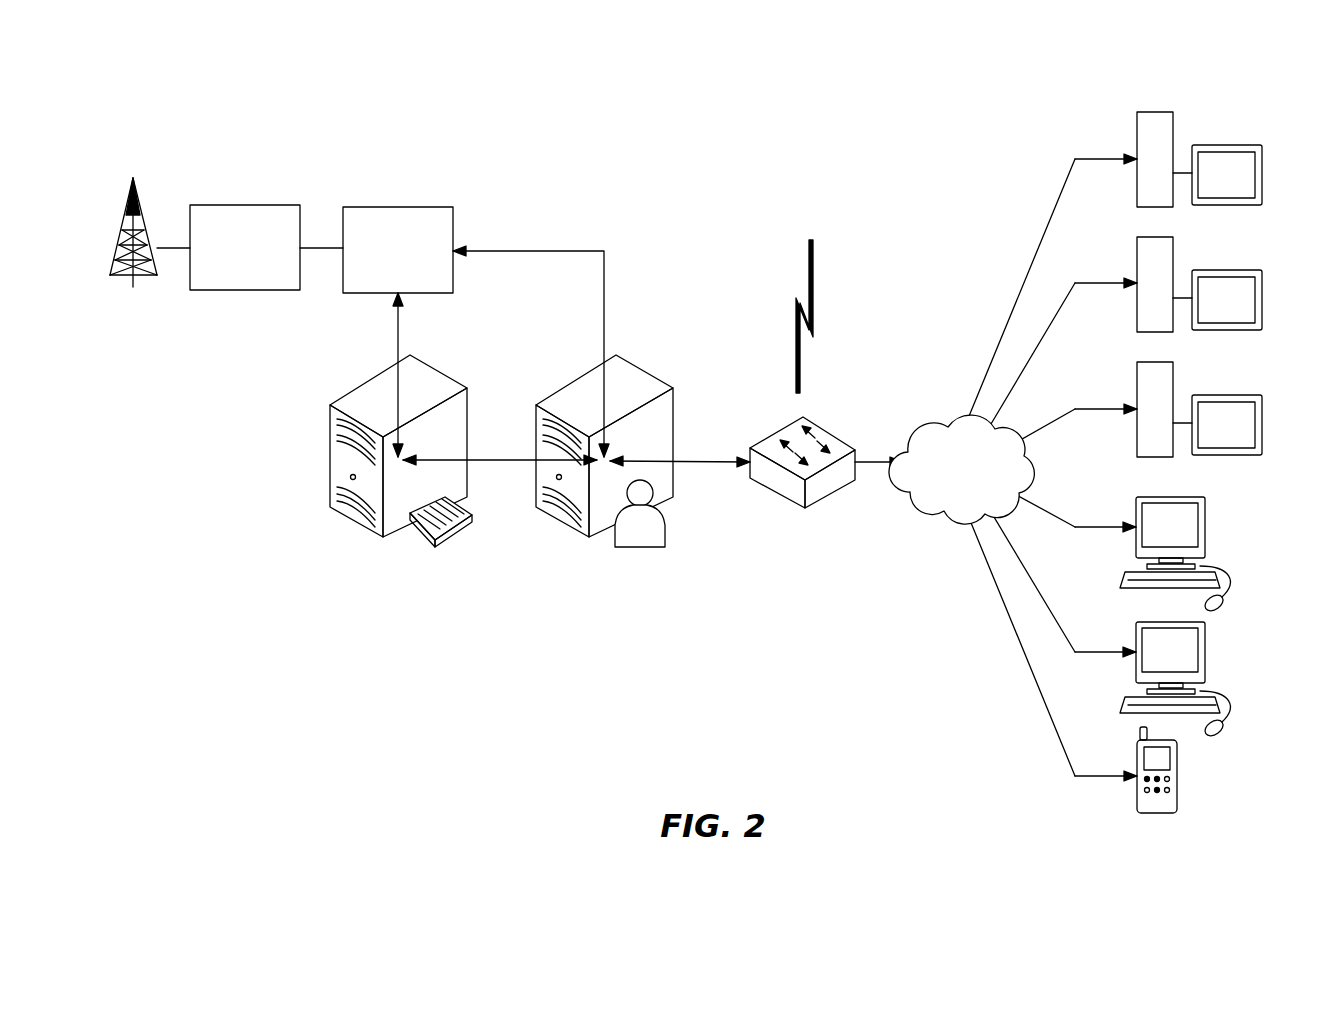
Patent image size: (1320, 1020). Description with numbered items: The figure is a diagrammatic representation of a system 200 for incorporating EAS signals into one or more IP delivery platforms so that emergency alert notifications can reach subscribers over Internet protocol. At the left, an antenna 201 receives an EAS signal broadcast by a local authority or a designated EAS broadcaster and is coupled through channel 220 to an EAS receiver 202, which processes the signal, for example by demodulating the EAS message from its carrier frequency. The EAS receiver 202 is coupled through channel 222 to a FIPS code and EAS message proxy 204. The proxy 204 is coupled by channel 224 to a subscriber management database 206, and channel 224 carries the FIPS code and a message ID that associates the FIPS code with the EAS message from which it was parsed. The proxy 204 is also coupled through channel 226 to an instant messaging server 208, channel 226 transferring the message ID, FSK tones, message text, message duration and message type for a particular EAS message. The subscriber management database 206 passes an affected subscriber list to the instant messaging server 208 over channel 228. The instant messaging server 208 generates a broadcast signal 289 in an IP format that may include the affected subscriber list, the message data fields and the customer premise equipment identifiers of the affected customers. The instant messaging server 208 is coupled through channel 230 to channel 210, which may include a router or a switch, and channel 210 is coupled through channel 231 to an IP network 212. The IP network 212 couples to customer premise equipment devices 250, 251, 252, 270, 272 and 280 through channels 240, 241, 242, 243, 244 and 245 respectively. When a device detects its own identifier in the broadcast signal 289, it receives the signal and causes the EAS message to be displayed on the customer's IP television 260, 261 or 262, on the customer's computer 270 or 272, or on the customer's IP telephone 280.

The system 200 is at (180, 100).
The antenna 201 is at (124, 228).
The EAS receiver 202 is at (251, 206).
The FIPS code and EAS message proxy 204 is at (401, 207).
The subscriber management database 206 is at (363, 380).
The instant messaging server 208 is at (570, 380).
The channel 210 is at (773, 433).
The IP network 212 is at (919, 432).
The channel 220 is at (171, 248).
The channel 222 is at (321, 248).
The channel 224 is at (400, 330).
The channel 226 is at (538, 251).
The channel 228 is at (498, 459).
The channel 230 is at (704, 459).
The channel 231 is at (874, 462).
The channel 240 is at (1108, 157).
The channel 241 is at (1108, 282).
The channel 242 is at (1108, 407).
The channel 243 is at (1108, 526).
The channel 244 is at (1108, 651).
The channel 245 is at (1108, 775).
The customer premise equipment device 250 is at (1174, 126).
The customer premise equipment device 251 is at (1174, 251).
The customer premise equipment device 252 is at (1174, 376).
The IP television 260 is at (1263, 176).
The IP television 261 is at (1263, 301).
The IP television 262 is at (1263, 426).
The computer 270 is at (1206, 528).
The computer 272 is at (1206, 653).
The IP telephone 280 is at (1178, 777).
The broadcast signal 289 is at (813, 290).